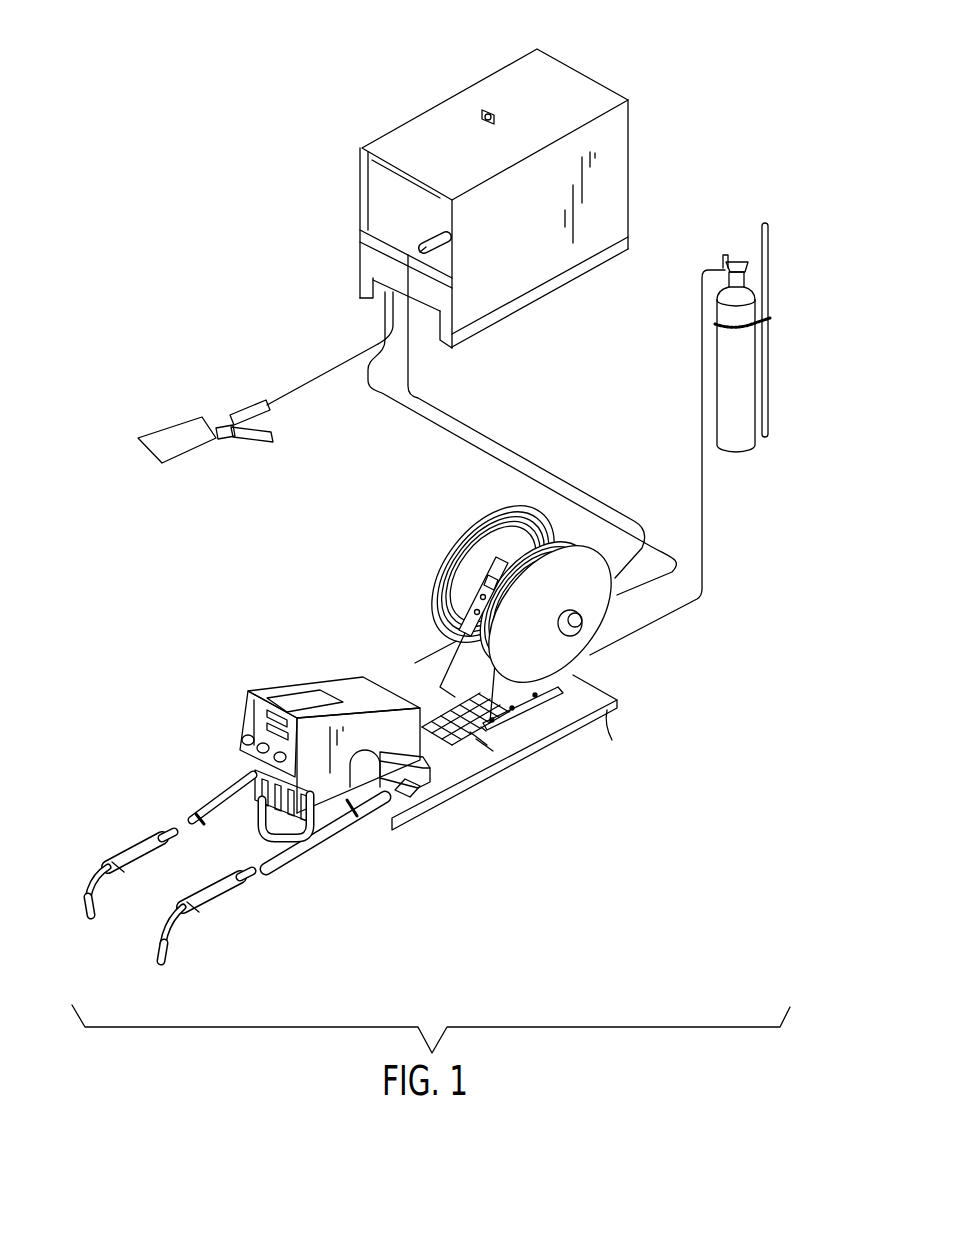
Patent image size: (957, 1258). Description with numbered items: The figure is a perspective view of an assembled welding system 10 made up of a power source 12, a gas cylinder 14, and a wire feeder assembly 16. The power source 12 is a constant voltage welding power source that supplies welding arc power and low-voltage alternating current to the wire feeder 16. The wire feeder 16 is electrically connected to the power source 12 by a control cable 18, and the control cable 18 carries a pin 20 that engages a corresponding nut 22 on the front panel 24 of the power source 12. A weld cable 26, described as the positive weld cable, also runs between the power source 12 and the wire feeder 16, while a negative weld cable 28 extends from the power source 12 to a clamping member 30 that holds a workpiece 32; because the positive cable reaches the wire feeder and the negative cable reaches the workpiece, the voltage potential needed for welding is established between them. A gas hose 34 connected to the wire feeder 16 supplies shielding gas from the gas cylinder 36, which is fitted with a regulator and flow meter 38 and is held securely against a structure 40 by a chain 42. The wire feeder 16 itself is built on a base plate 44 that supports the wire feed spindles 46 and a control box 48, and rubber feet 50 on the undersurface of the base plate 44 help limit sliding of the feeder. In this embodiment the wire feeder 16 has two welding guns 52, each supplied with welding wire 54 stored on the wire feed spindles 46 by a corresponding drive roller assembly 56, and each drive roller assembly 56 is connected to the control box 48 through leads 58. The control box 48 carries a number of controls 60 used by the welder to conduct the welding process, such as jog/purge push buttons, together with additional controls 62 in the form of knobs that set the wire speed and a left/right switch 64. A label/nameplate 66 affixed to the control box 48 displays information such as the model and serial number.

The welding system 10 is at (394, 52).
The power source 12 is at (597, 60).
The gas cylinder 14 is at (717, 300).
The wire feeder assembly 16 is at (386, 700).
The control cable 18 is at (408, 362).
The pin 20 is at (428, 252).
The nut 22 is at (449, 234).
The front panel 24 is at (404, 210).
The weld cable 26 is at (372, 352).
The negative weld cable 28 is at (324, 372).
The clamping member 30 is at (265, 440).
The workpiece 32 is at (147, 432).
The gas hose 34 is at (702, 592).
The gas cylinder 36 is at (714, 370).
The regulator and flow meter 38 is at (711, 246).
The structure 40 is at (770, 356).
The chain 42 is at (770, 318).
The base plate 44 is at (513, 742).
The wire feed spindles 46 is at (523, 584).
The control box 48 is at (299, 708).
The rubber feet 50 is at (608, 709).
The welding guns 52 is at (203, 900).
The welding wire 54 is at (480, 533).
The drive roller assembly 56 is at (388, 813).
The leads 58 is at (277, 840).
The controls 60 is at (224, 788).
The additional controls 62 is at (238, 733).
The left/right switch 64 is at (255, 717).
The label/nameplate 66 is at (305, 697).